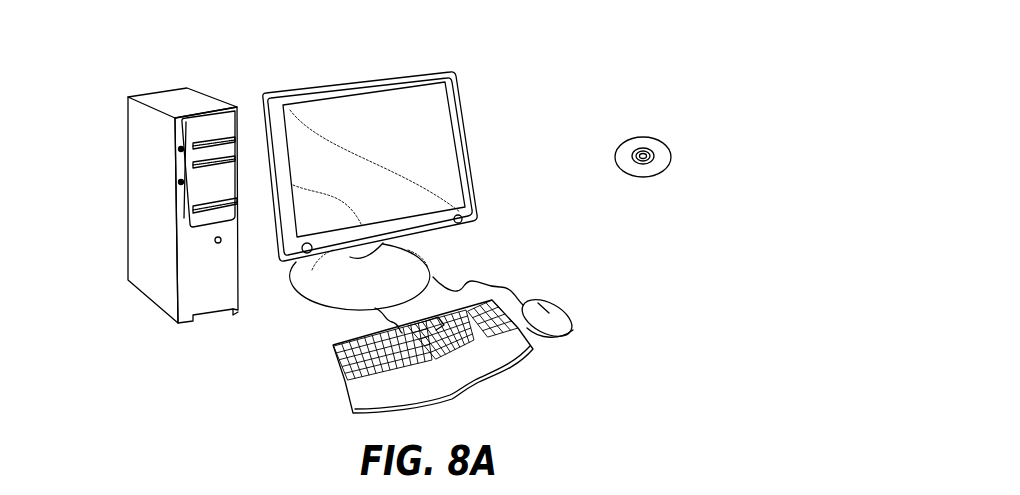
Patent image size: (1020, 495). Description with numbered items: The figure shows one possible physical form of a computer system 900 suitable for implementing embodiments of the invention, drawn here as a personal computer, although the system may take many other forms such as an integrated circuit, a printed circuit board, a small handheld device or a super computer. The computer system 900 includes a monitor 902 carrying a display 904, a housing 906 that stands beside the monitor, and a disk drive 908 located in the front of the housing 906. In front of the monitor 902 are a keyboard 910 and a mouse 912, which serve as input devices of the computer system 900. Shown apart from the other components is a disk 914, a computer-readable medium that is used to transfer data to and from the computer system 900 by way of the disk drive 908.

The computer system 900 is at (573, 60).
The monitor 902 is at (473, 163).
The display 904 is at (432, 107).
The housing 906 is at (175, 98).
The disk drive 908 is at (225, 202).
The keyboard 910 is at (338, 377).
The mouse 912 is at (568, 308).
The disk 914 is at (658, 137).